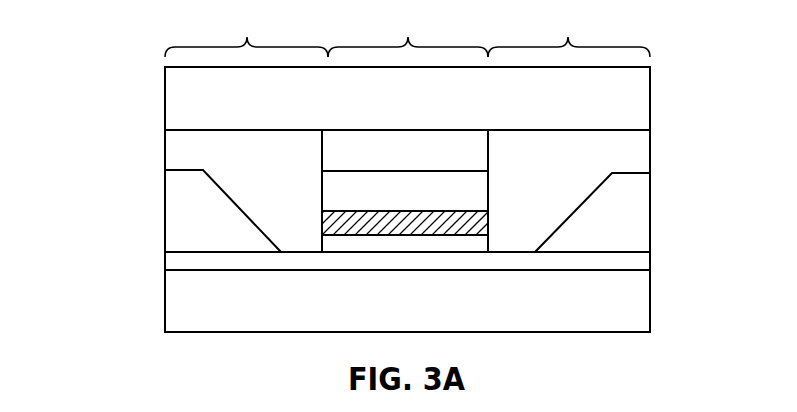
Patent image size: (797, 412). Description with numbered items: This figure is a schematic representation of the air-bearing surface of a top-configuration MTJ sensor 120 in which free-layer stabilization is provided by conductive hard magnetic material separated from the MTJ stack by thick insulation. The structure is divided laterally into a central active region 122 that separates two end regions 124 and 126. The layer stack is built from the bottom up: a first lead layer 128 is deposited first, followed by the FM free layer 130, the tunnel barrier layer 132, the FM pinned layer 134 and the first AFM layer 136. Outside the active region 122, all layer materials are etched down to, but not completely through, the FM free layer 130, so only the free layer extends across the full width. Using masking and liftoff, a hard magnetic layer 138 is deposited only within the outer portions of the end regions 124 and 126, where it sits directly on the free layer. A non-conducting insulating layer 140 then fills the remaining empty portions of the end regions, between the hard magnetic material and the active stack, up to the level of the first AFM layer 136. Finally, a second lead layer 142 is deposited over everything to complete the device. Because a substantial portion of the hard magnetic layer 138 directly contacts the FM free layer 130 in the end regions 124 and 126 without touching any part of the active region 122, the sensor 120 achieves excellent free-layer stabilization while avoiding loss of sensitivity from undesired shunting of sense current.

The MTJ sensor 120 is at (122, 79).
The active region 122 is at (408, 32).
The end region 124 is at (246, 32).
The end region 126 is at (569, 32).
The first lead (L1) layer 128 is at (643, 300).
The FM free layer 130 is at (643, 263).
The tunnel barrier layer 132 is at (458, 230).
The FM pinned layer 134 is at (480, 183).
The first AFM layer 136 is at (480, 149).
The hard magnetic (HM) layer 138 is at (175, 202).
The insulating layer 140 is at (175, 148).
The second lead (L2) layer 142 is at (643, 93).